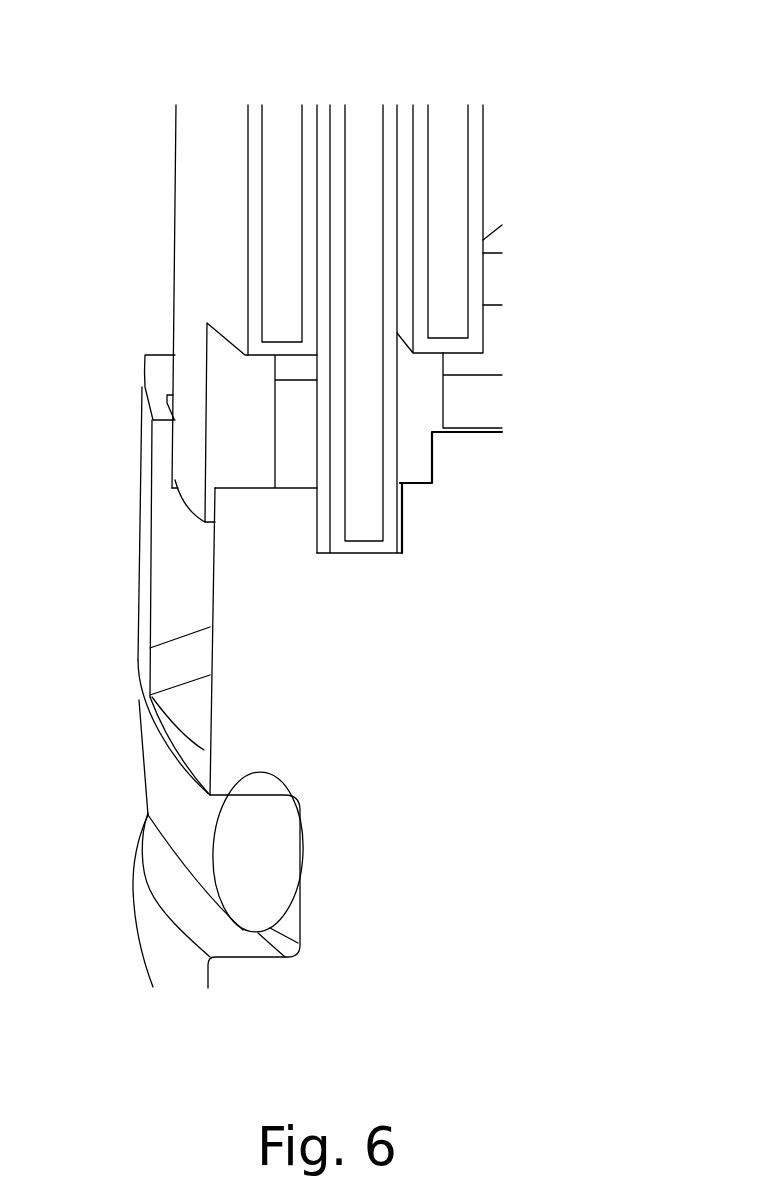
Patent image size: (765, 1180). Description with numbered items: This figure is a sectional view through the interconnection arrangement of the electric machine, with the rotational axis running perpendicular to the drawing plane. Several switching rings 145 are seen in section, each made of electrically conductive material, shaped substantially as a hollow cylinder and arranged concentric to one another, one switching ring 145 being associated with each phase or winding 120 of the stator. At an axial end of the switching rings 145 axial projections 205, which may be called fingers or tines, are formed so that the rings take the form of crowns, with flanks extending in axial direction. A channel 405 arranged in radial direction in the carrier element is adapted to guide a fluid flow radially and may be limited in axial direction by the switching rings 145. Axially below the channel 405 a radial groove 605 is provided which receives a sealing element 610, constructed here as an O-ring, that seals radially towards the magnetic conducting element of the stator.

The switching ring 145 is at (280, 103).
The axial projection 205 is at (189, 367).
The winding 120 is at (147, 442).
The channel 405 is at (169, 567).
The sealing element 610 is at (145, 762).
The radial groove 605 is at (138, 840).